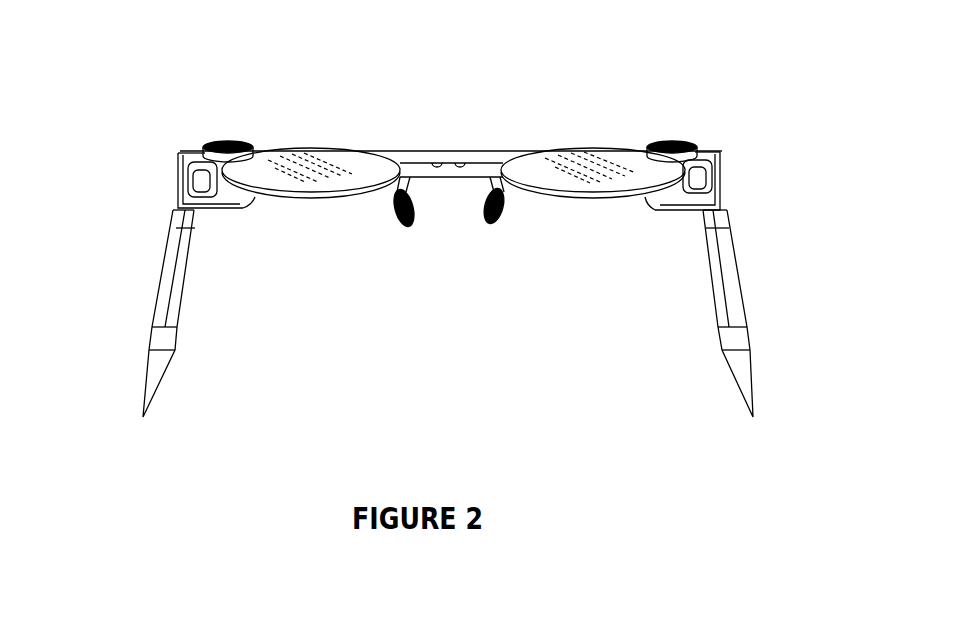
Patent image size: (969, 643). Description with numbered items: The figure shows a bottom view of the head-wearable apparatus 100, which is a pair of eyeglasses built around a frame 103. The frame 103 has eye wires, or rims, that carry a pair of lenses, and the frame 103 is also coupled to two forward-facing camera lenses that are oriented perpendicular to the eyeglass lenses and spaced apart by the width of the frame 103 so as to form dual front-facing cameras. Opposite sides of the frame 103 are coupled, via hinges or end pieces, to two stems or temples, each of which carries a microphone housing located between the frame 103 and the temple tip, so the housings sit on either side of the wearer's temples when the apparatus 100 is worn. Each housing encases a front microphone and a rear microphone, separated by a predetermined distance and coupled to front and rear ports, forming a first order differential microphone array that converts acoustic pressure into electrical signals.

The head-wearable apparatus 100 is at (120, 40).
The frame 103 is at (388, 150).